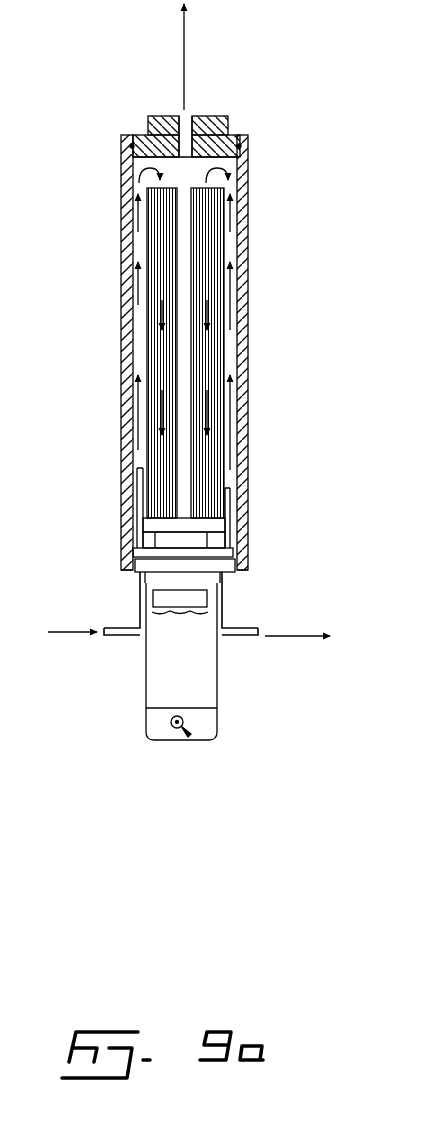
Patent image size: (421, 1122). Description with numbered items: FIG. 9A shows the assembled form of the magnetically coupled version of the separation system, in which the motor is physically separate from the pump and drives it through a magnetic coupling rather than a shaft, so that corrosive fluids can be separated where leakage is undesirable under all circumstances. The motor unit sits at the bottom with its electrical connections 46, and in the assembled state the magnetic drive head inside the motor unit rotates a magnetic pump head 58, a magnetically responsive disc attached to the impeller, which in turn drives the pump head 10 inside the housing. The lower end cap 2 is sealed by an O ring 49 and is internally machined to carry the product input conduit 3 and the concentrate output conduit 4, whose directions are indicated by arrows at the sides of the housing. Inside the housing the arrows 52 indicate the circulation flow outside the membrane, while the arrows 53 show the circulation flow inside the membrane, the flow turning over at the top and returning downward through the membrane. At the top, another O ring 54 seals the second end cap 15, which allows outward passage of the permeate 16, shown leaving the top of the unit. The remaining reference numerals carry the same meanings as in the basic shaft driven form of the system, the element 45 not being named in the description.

The end cap 2 is at (143, 566).
The product input conduit 3 is at (58, 632).
The concentrate output conduit 4 is at (304, 636).
The pump head 10 is at (205, 527).
The second end cap 15 is at (229, 118).
The permeate 16 is at (197, 57).
The container 45 is at (218, 668).
The electrical connections 46 is at (192, 731).
The O ring 49 is at (135, 556).
The arrows indicating circulation flow outside the membrane 52 is at (228, 305).
The arrows indicating circulation flow inside the membrane 53 is at (207, 258).
The O ring 54 is at (246, 146).
The magnetic pump head 58 is at (195, 541).